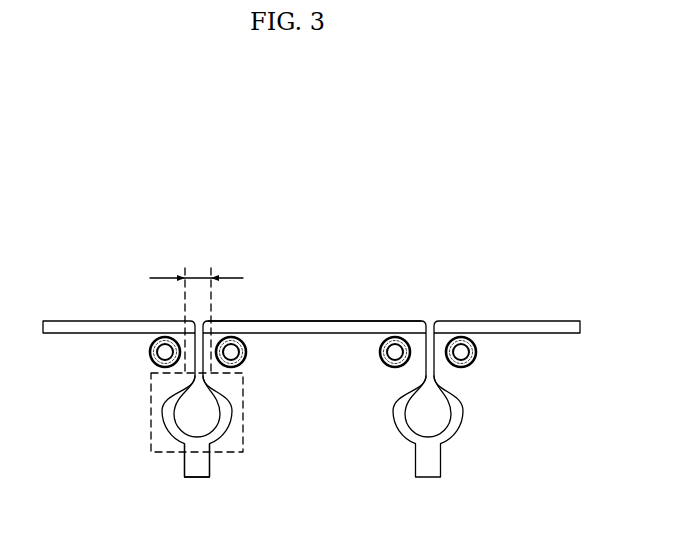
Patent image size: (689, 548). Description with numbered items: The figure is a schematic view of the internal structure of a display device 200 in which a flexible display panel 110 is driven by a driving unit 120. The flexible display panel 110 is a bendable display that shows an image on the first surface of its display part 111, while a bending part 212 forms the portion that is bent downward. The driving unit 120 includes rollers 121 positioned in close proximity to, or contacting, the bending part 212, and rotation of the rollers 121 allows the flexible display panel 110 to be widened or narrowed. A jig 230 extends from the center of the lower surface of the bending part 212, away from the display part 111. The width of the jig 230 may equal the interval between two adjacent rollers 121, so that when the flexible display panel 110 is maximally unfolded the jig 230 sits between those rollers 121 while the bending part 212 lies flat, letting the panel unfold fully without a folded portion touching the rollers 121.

The display device 200 is at (90, 212).
The flexible display panel 110 is at (100, 313).
The display part 111 is at (346, 321).
The driving unit 120 is at (139, 366).
The roller 121 is at (384, 365).
The bending part 212 is at (243, 408).
The jig 230 is at (197, 477).